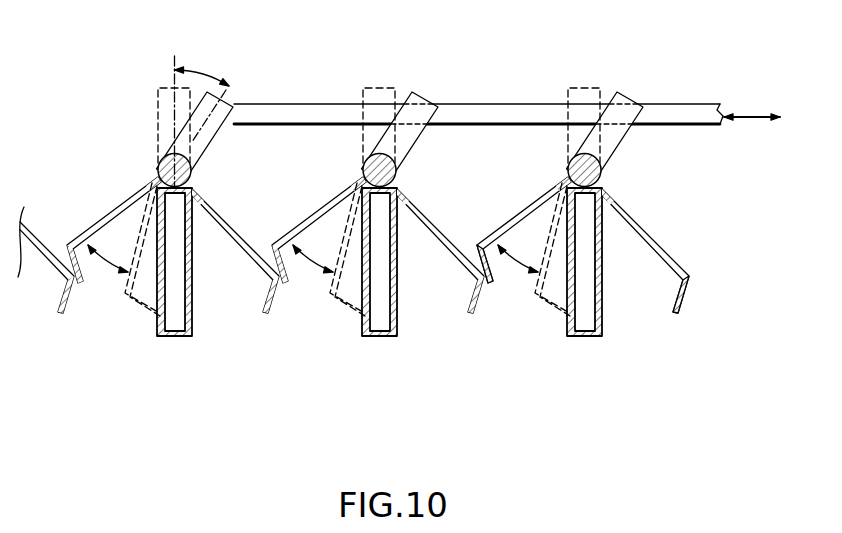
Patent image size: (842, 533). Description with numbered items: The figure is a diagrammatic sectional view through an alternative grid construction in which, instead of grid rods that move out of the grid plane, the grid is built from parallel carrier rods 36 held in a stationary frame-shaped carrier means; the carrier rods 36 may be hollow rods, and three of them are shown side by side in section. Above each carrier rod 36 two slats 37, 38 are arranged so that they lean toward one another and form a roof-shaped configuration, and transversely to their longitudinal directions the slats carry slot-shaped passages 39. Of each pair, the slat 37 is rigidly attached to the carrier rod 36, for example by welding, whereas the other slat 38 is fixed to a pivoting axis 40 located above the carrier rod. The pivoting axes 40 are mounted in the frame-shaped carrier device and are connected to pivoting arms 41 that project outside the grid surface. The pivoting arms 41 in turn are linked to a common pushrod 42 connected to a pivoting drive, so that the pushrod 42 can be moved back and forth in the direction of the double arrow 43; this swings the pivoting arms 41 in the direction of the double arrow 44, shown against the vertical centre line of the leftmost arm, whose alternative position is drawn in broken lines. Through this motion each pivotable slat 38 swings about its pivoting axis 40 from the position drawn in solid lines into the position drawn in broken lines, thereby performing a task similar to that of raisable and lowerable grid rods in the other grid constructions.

The carrier rod 36 is at (178, 321).
The slat 37 is at (230, 212).
The pivotable slat 38 is at (103, 198).
The slot-shaped passage 39 is at (501, 236).
The pivoting axis 40 is at (158, 157).
The pivoting arm 41 is at (213, 115).
The pushrod 42 is at (692, 106).
The double arrow 43 is at (758, 116).
The double arrow 44 is at (200, 72).